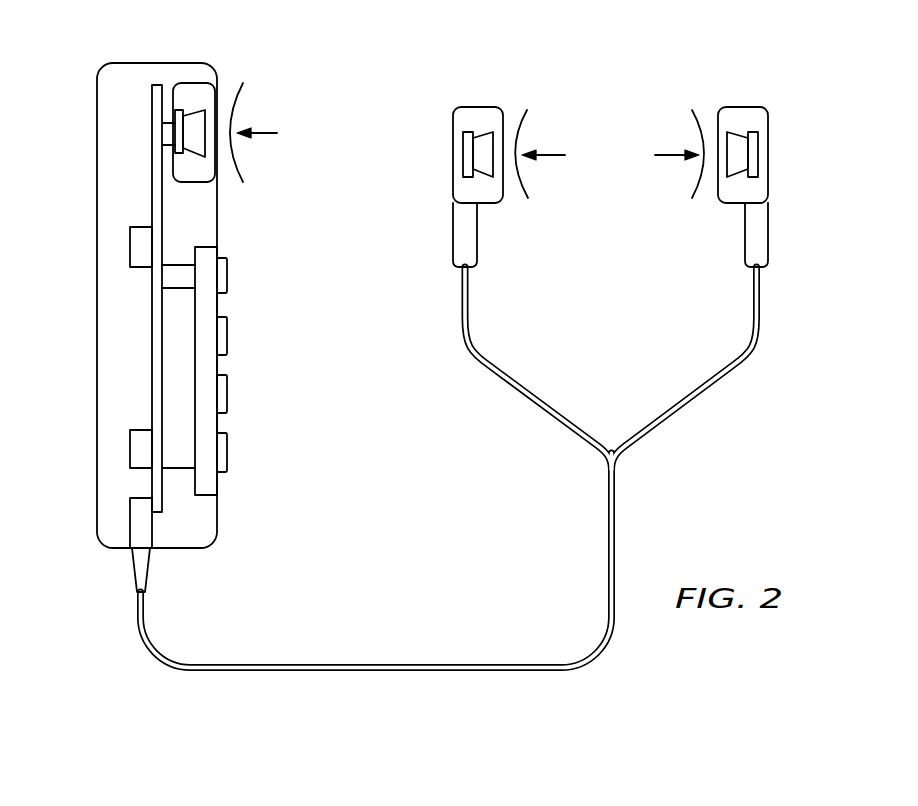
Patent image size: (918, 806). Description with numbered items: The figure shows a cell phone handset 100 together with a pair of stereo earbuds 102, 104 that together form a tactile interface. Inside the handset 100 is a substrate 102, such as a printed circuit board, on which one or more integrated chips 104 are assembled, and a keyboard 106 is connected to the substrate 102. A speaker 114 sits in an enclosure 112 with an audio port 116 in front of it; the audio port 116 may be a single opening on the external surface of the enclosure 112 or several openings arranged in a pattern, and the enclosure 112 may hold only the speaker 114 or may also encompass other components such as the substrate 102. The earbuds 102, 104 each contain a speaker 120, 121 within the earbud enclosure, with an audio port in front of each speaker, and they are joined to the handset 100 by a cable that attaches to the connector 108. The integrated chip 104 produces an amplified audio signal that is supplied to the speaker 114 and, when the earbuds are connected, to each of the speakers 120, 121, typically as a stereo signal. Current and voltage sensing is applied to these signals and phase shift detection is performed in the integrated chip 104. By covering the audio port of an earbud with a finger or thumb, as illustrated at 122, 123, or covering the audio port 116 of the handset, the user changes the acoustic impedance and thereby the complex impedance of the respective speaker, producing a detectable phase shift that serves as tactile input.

The cell phone handset 100 is at (141, 63).
The substrate 102 is at (152, 343).
The integrated chip 104 is at (137, 447).
The keyboard 106 is at (228, 393).
The connector 108 is at (135, 523).
The enclosure 112 is at (194, 83).
The speaker 114 is at (193, 160).
The audio port 116 is at (239, 108).
The speaker 120 is at (485, 132).
The speaker 121 is at (736, 132).
The covering of earbud audio port 122 is at (529, 126).
The covering of earbud audio port 123 is at (696, 178).